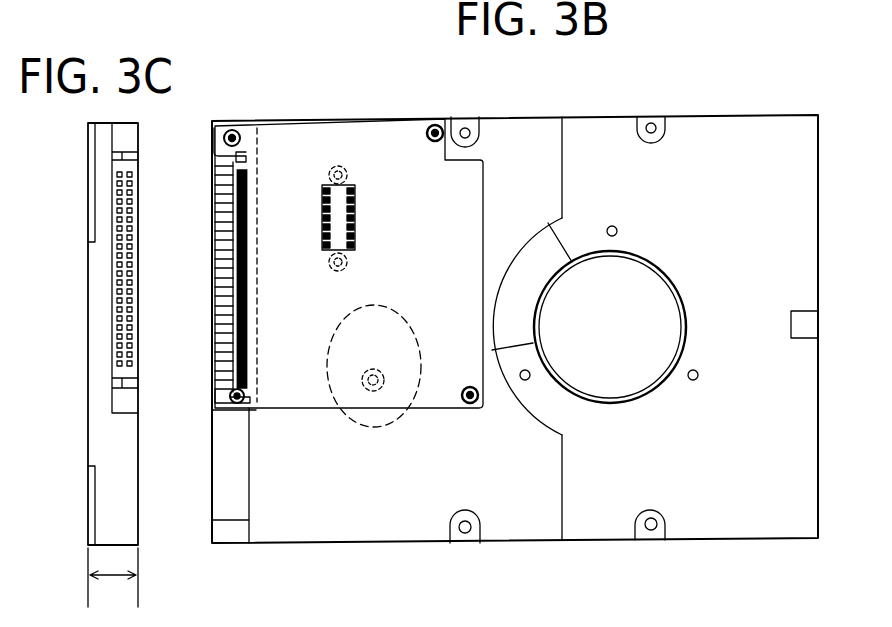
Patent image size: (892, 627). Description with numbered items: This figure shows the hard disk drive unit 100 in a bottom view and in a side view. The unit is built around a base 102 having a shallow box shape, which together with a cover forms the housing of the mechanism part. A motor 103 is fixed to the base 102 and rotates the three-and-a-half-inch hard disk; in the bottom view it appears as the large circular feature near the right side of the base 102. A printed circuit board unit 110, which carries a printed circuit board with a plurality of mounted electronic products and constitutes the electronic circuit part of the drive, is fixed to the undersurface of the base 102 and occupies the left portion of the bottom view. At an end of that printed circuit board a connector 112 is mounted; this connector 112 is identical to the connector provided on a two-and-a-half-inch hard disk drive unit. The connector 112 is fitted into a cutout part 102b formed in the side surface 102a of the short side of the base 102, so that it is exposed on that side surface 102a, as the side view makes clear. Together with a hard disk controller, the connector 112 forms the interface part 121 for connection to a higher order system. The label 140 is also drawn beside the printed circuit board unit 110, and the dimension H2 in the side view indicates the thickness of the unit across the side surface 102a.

In FIG. 3B, the hard disk drive unit 100 is at (790, 60).
In FIG. 3B, the base 102 is at (762, 138).
In FIG. 3B, the side surface 102a is at (228, 448).
In FIG. 3C, the side surface 102a is at (108, 477).
In FIG. 3C, the cutout part 102b is at (113, 313).
In FIG. 3B, the motor 103 is at (652, 285).
In FIG. 3B, the printed circuit board unit 110 is at (338, 106).
In FIG. 3B, the connector 112 is at (215, 210).
In FIG. 3C, the connector 112 is at (135, 265).
In FIG. 3B, the interface part 121 is at (273, 138).
In FIG. 3B, the circuit board unit 140 is at (374, 366).
In FIG. 3C, the thickness dimension H2 is at (113, 579).